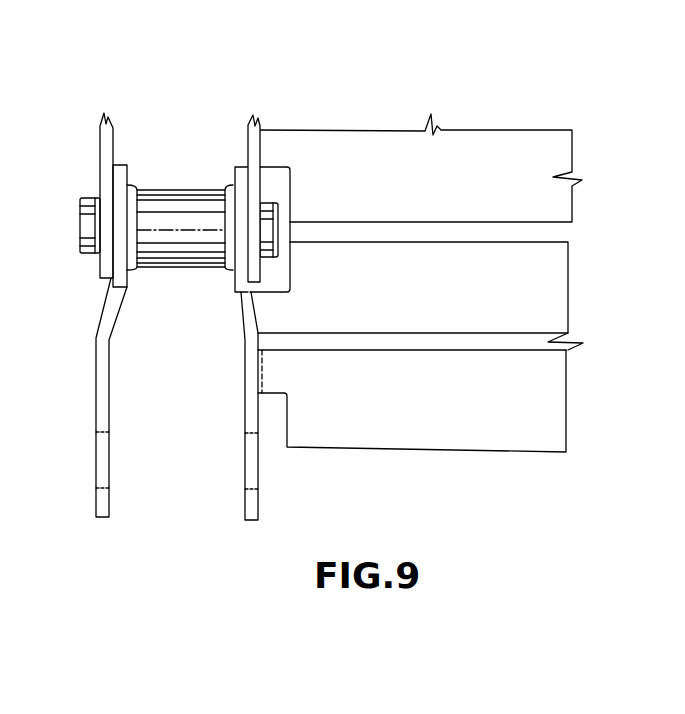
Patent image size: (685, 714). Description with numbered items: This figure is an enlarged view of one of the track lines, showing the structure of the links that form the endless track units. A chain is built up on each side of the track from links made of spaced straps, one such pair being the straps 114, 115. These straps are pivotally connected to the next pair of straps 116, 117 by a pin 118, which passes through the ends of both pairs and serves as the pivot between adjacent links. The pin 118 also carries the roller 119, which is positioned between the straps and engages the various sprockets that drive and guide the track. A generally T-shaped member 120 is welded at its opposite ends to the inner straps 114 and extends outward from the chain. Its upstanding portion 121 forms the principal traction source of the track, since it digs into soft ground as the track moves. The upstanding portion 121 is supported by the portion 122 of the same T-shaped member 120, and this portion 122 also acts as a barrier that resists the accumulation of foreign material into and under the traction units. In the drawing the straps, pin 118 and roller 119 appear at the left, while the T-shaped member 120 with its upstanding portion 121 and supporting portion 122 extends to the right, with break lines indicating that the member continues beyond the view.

The strap 114 is at (244, 498).
The strap 115 is at (108, 498).
The strap 116 is at (247, 141).
The strap 117 is at (114, 141).
The pin 118 is at (80, 223).
The roller 119 is at (190, 268).
The T-shaped member 120 is at (568, 292).
The upstanding portion 121 is at (530, 353).
The supporting portion 122 is at (566, 428).